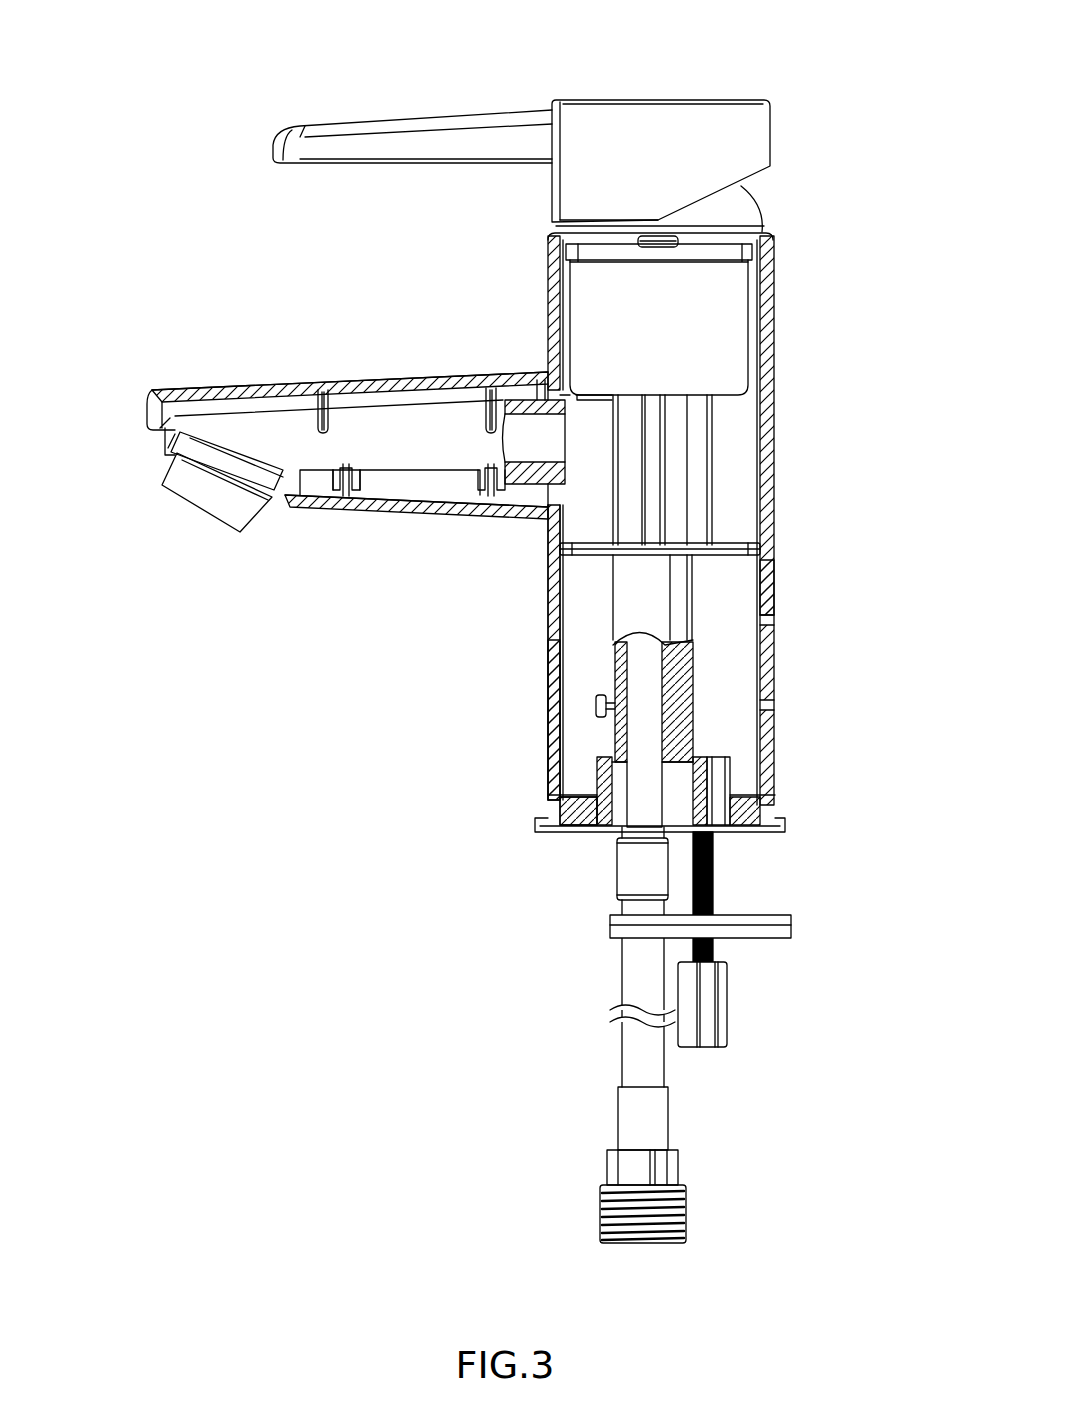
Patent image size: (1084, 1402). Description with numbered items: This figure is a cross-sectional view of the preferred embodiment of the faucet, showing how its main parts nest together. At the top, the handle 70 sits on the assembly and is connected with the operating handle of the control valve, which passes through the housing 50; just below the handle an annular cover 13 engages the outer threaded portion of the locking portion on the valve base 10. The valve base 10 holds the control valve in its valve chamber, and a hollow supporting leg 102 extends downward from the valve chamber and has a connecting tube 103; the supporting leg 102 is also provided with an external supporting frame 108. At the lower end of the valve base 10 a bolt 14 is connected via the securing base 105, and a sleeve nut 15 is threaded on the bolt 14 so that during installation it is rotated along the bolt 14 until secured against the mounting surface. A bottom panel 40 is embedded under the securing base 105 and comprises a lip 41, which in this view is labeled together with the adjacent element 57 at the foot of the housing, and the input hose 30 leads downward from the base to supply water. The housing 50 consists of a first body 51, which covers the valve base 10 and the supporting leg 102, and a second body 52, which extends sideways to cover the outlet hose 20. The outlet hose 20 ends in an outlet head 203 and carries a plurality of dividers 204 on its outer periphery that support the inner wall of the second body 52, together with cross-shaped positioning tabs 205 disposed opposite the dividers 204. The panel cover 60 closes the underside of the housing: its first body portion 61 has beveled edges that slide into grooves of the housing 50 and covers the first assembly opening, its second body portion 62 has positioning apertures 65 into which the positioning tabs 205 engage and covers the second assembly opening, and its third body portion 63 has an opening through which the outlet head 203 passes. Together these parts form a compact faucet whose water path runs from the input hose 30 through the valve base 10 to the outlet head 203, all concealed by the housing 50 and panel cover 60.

The handle 70 is at (687, 92).
The annular cover 13 is at (747, 212).
The valve base 10 is at (576, 284).
The connecting tube 103 is at (582, 413).
The supporting leg 102 is at (667, 473).
The external supporting frame 108 is at (745, 540).
The securing base 105 is at (712, 757).
The housing 50 is at (784, 379).
The first body 51 is at (768, 605).
The lip 41 is at (772, 808).
The base ring flange 57 is at (578, 811).
The bottom panel 40 is at (524, 825).
The panel cover 60 is at (536, 615).
The first body portion 61 is at (545, 728).
The outlet hose 20 is at (412, 418).
The second body 52 is at (192, 388).
The second body portion 62 is at (314, 510).
The dividers 204 is at (327, 392).
The cross-shaped positioning tabs 205 is at (442, 492).
The positioning apertures 65 is at (346, 480).
The third body portion 63 is at (167, 437).
The outlet head 203 is at (190, 503).
The input hose 30 is at (604, 1058).
The bolt 14 is at (718, 873).
The sleeve nut 15 is at (718, 1015).